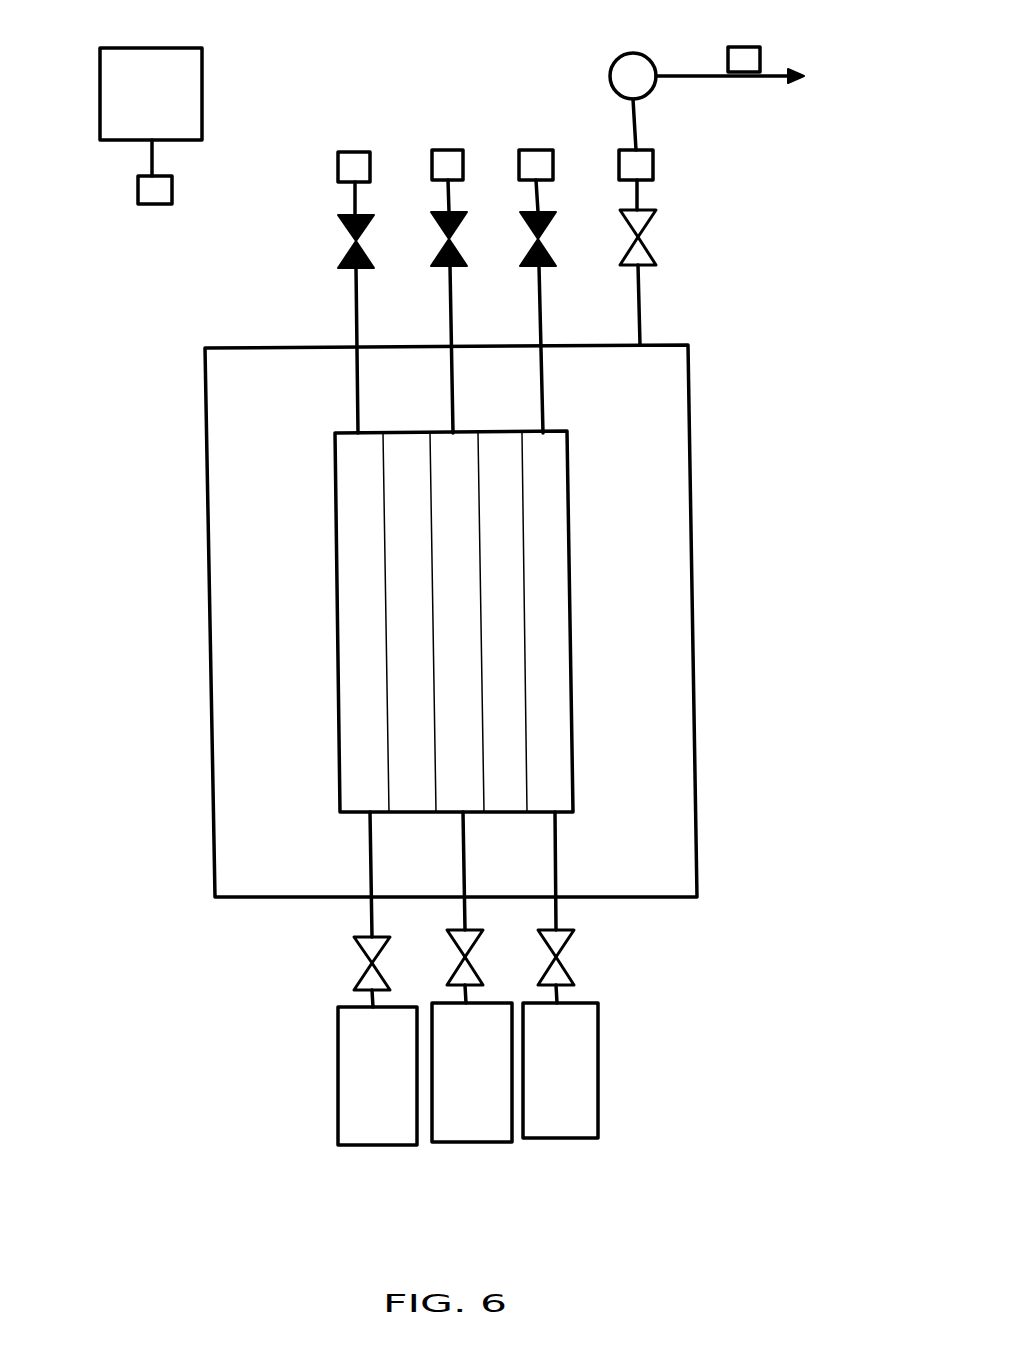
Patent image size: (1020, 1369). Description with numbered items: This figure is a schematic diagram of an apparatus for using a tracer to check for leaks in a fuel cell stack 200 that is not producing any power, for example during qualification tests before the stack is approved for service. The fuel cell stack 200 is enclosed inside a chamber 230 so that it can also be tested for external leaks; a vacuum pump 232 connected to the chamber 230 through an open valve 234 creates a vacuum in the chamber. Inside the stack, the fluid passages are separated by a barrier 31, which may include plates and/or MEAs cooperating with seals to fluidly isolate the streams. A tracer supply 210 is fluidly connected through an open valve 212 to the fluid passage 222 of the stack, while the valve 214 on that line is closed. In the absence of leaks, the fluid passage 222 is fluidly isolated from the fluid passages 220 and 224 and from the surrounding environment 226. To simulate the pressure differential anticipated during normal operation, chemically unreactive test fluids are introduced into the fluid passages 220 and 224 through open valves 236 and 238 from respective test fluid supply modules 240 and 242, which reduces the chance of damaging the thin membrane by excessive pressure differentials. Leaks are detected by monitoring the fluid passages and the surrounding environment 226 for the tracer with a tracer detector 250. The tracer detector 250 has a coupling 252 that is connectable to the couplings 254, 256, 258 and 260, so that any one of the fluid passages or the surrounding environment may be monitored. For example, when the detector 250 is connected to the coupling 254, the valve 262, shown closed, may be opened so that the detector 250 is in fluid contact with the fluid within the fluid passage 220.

The fuel cell stack 200 is at (278, 458).
The barrier 31 is at (495, 747).
The tracer supply 210 is at (475, 1062).
The open valve 212 is at (458, 945).
The valve 214 is at (440, 232).
The fluid passage 220 is at (365, 548).
The fluid passage 222 is at (462, 612).
The fluid passage 224 is at (545, 668).
The surrounding environment 226 is at (638, 797).
The chamber 230 is at (697, 672).
The vacuum pump 232 is at (630, 78).
The open valve 234 is at (645, 252).
The open valve 236 is at (362, 947).
The open valve 238 is at (563, 948).
The test fluid supply module 240 is at (370, 1052).
The test fluid supply module 242 is at (570, 1102).
The tracer detector 250 is at (177, 95).
The coupling 252 is at (155, 190).
The coupling 254 is at (350, 167).
The coupling 256 is at (443, 163).
The coupling 258 is at (537, 167).
The coupling 260 is at (745, 53).
The valve 262 is at (342, 233).